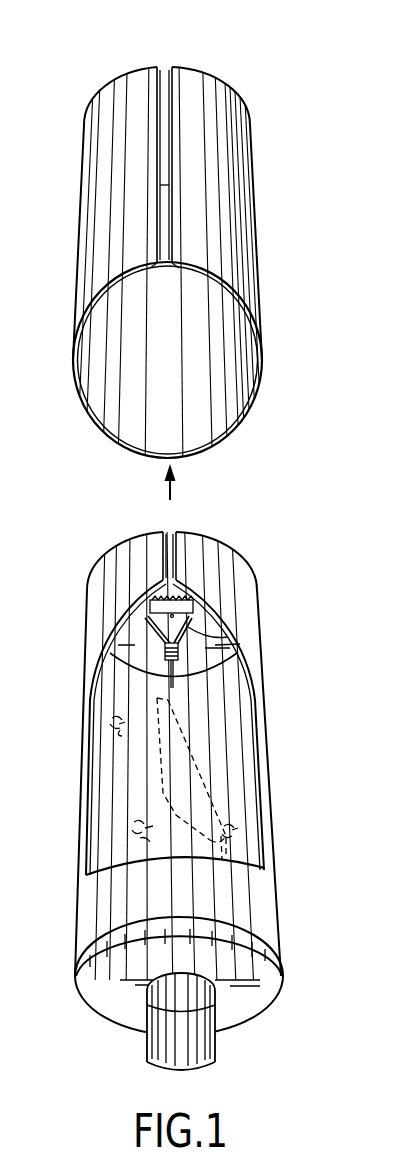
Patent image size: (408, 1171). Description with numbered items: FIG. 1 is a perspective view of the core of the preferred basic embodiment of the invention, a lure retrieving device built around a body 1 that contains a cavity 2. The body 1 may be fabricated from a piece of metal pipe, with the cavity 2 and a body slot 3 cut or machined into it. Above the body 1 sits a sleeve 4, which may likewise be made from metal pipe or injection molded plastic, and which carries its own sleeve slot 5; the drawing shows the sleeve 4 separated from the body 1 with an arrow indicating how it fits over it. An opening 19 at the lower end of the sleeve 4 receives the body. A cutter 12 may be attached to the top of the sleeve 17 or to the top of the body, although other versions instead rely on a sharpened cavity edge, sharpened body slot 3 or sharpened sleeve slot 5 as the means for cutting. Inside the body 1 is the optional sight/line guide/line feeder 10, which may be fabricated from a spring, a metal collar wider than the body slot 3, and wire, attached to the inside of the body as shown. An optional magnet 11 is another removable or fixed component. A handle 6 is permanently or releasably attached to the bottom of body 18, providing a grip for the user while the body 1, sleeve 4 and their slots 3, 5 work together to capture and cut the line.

The body 1 is at (273, 914).
The cavity 2 is at (233, 729).
The body slot 3 is at (173, 532).
The sleeve 4 is at (253, 246).
The sleeve slot 5 is at (163, 68).
The handle 6 is at (208, 1046).
The sight/line guide/line feeder 10 is at (225, 627).
The magnet 11 is at (92, 977).
The cutter 12 is at (147, 607).
The top of sleeve 17 is at (110, 86).
The bottom of body 18 is at (273, 984).
The cap opening 19 is at (260, 389).